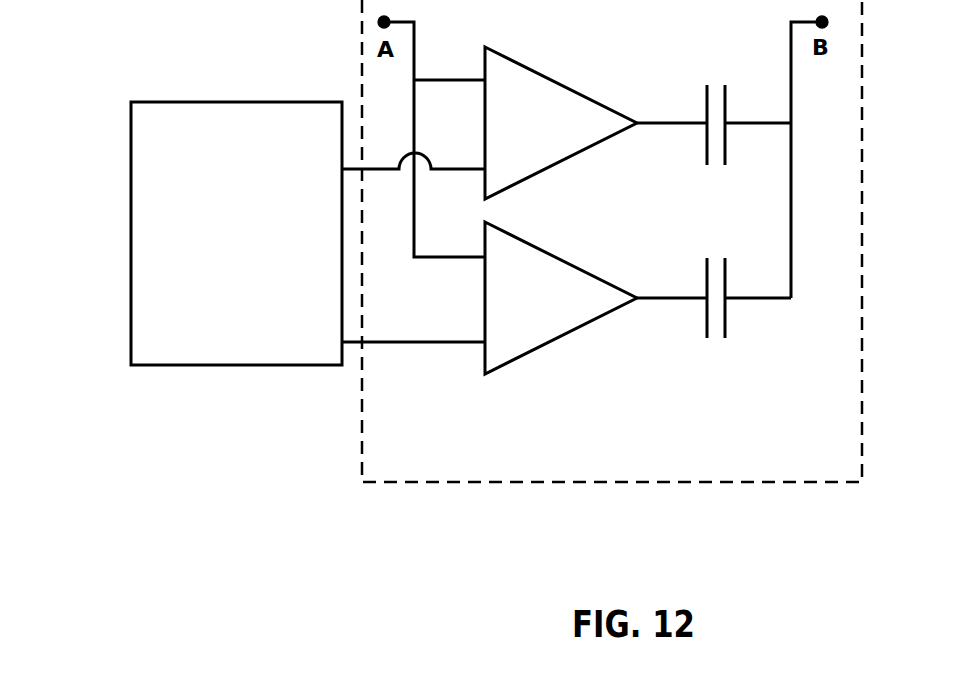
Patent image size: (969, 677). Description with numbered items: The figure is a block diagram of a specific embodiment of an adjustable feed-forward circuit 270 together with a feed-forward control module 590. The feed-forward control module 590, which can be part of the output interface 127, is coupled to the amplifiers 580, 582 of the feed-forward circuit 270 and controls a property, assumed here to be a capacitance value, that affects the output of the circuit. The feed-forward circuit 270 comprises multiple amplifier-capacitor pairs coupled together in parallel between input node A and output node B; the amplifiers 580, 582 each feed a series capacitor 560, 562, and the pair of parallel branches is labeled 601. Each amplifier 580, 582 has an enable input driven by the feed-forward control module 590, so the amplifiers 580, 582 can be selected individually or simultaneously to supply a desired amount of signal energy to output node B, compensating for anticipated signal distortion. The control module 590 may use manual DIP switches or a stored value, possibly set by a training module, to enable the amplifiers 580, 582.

The output interface 127 is at (178, 380).
The feed-forward control module 590 is at (257, 308).
The feed-forward circuit 270 is at (612, 427).
The amplifier pair 601 is at (570, 210).
The amplifier 580 is at (558, 132).
The amplifier 582 is at (558, 307).
The capacitor 560 is at (702, 110).
The capacitor 562 is at (702, 282).